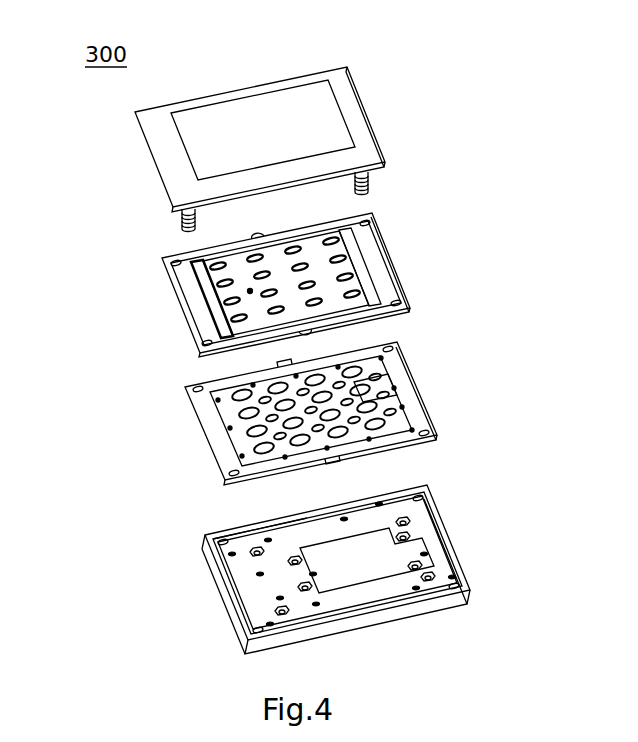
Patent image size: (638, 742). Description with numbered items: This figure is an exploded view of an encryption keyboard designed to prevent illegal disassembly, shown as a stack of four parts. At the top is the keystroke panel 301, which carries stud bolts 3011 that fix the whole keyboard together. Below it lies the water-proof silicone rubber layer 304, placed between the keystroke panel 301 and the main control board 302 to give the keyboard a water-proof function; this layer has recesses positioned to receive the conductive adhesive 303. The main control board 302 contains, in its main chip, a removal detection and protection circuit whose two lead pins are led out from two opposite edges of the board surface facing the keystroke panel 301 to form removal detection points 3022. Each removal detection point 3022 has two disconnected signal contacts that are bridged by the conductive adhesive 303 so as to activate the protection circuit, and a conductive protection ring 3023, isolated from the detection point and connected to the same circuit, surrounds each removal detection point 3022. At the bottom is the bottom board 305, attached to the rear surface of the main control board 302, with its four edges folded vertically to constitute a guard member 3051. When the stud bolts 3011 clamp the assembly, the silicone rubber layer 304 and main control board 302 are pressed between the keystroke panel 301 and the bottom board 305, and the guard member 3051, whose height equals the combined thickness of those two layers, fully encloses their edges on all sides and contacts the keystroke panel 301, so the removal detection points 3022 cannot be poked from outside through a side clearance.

The keystroke panel 301 is at (352, 117).
The stud bolts 3011 is at (370, 177).
The conductive adhesive 303 is at (258, 243).
The water-proof silicone rubber layer 304 is at (345, 283).
The main control board 302 is at (413, 380).
The conductive protection ring 3023 is at (400, 425).
The removal detection point 3022 is at (335, 458).
The bottom board 305 is at (228, 594).
The guard member 3051 is at (285, 518).